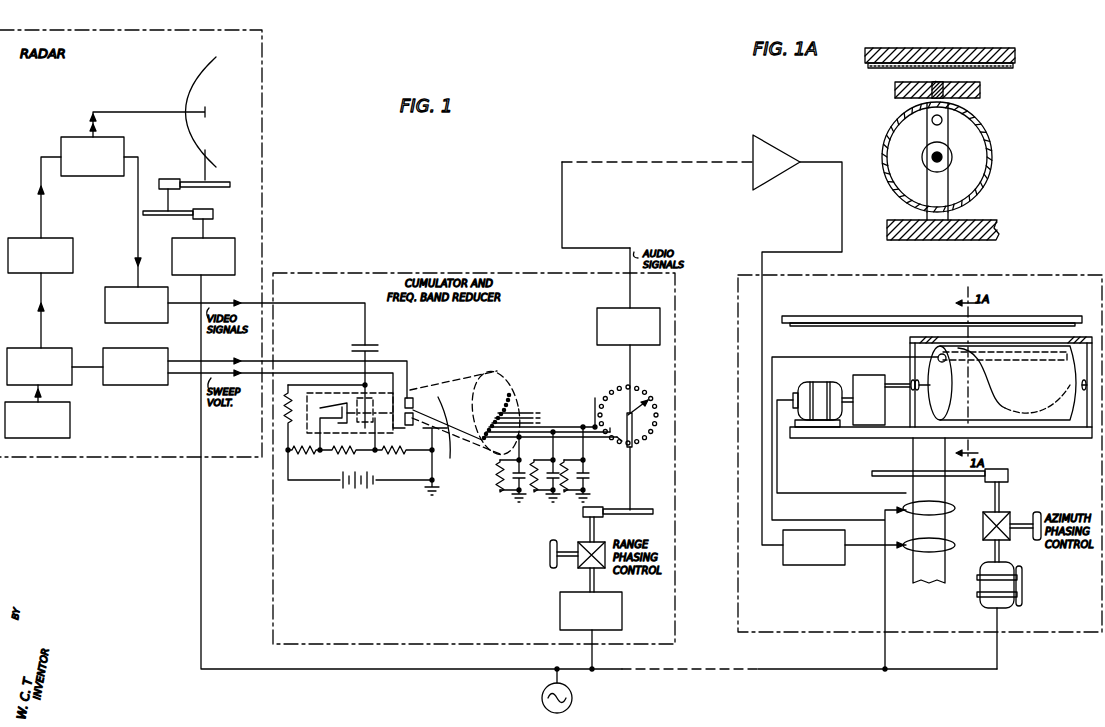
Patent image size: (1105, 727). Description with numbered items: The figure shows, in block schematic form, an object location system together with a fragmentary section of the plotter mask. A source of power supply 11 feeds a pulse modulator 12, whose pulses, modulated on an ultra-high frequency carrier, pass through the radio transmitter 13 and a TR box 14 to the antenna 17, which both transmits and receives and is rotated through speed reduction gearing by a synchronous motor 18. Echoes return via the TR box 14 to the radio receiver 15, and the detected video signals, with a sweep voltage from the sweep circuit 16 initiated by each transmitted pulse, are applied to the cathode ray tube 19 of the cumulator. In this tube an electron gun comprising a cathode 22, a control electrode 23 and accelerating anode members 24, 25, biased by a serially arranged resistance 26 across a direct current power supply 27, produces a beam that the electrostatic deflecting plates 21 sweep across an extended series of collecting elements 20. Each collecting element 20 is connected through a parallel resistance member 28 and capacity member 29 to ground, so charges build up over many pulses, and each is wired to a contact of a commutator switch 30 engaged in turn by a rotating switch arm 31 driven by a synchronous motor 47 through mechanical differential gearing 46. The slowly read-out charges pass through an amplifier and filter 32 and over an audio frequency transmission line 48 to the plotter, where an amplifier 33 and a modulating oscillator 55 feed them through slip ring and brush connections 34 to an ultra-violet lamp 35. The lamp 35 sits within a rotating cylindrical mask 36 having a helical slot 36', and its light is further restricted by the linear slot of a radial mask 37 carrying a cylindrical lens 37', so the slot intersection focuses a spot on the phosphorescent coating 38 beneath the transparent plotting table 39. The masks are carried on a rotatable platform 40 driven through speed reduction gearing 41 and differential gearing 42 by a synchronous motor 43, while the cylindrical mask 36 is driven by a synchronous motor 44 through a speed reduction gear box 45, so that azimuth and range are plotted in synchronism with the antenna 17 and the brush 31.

In FIG. 1, the source of power supply 11 is at (66, 413).
In FIG. 1, the pulse modulator 12 is at (60, 351).
In FIG. 1, the radio transmitter 13 is at (58, 241).
In FIG. 1, the TR box 14 is at (108, 143).
In FIG. 1, the radio receiver 15 is at (121, 287).
In FIG. 1, the sweep circuit 16 is at (150, 351).
In FIG. 1, the antenna 17 is at (198, 99).
In FIG. 1, the synchronous motor 18 is at (218, 241).
In FIG. 1, the cathode ray tube 19 is at (482, 379).
In FIG. 1, the collecting elements 20 is at (513, 395).
In FIG. 1, the electrostatic deflecting plates 21 is at (411, 398).
In FIG. 1, the cathode 22 is at (346, 405).
In FIG. 1, the control electrode 23 is at (367, 405).
In FIG. 1, the accelerating anode member 24 is at (385, 430).
In FIG. 1, the accelerating anode member 25 is at (447, 433).
In FIG. 1, the serially arranged resistance 26 is at (300, 453).
In FIG. 1, the direct current power supply 27 is at (353, 489).
In FIG. 1, the resistance member 28 is at (501, 478).
In FIG. 1, the capacity member 29 is at (512, 489).
In FIG. 1, the commutator switch 30 is at (612, 397).
In FIG. 1, the rotating switch arm 31 is at (640, 423).
In FIG. 1, the amplifier and filter 32 is at (645, 345).
In FIG. 1, the amplifier 33 is at (775, 148).
In FIG. 1, the slip ring and brush connections 34 is at (911, 551).
In FIG. 1, the ultra-violet lamp 35 is at (942, 362).
In FIG. 1A, the ultra-violet lamp 35 is at (943, 120).
In FIG. 1, the cylindrical mask 36 is at (1002, 401).
In FIG. 1A, the cylindrical mask 36 is at (947, 157).
In FIG. 1, the helical slot 36' is at (1014, 380).
In FIG. 1A, the helical slot 36' is at (910, 157).
In FIG. 1, the mask 37 is at (982, 382).
In FIG. 1A, the mask 37 is at (951, 92).
In FIG. 1, the cylindrical lens 37' is at (1005, 331).
In FIG. 1A, the cylindrical lens 37' is at (898, 84).
In FIG. 1, the phosphorescent coating 38 is at (801, 327).
In FIG. 1A, the phosphorescent coating 38 is at (1013, 67).
In FIG. 1, the plotting table 39 is at (920, 318).
In FIG. 1A, the plotting table 39 is at (1016, 53).
In FIG. 1, the platform 40 is at (848, 434).
In FIG. 1A, the platform 40 is at (980, 222).
In FIG. 1, the speed reduction gearing 41 is at (1008, 478).
In FIG. 1, the differential gearing 42 is at (1014, 521).
In FIG. 1, the synchronous motor 43 is at (1018, 586).
In FIG. 1, the synchronous motor 44 is at (818, 387).
In FIG. 1, the speed reduction gear box 45 is at (873, 378).
In FIG. 1, the mechanical differential gearing 46 is at (550, 563).
In FIG. 1, the synchronous motor 47 is at (560, 619).
In FIG. 1, the audio frequency transmission line 48 is at (626, 160).
In FIG. 1, the modulating oscillator 55 is at (810, 566).